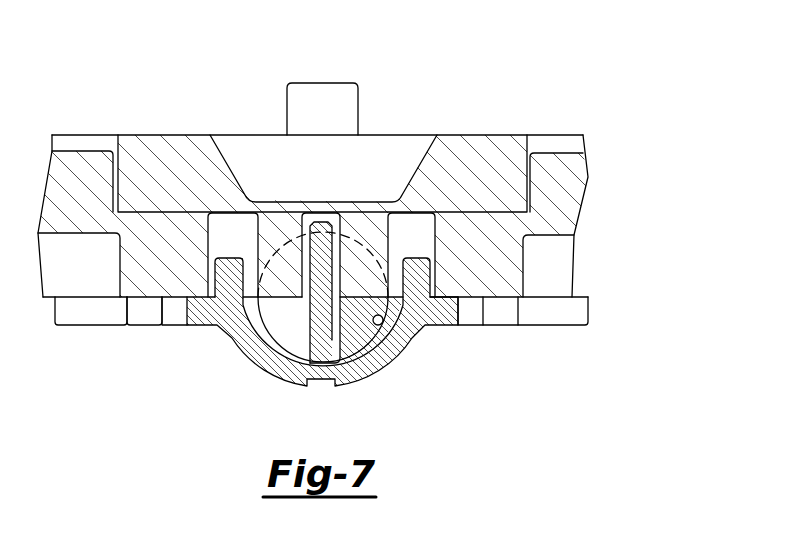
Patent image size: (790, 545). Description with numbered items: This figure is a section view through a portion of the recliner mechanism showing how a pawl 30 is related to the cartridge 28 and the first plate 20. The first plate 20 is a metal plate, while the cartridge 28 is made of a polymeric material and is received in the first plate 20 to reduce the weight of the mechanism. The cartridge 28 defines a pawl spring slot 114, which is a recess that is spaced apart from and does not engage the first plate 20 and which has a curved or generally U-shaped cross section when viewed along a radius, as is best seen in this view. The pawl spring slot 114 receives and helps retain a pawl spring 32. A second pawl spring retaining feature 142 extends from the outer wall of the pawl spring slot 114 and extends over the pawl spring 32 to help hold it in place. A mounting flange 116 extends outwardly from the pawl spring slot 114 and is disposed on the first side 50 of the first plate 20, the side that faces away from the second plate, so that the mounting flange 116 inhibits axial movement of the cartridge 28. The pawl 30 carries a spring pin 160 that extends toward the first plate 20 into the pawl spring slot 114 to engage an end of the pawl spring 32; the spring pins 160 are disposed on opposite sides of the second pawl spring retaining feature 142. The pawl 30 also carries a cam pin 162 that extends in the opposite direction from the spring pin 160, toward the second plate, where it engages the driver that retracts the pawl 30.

The first plate 20 is at (587, 178).
The pawl 30 is at (475, 135).
The cam pin 162 is at (358, 103).
The cartridge 28 is at (590, 313).
The first side 50 is at (141, 299).
The mounting flange 116 is at (186, 326).
The pawl spring slot 114 is at (258, 350).
The pawl spring 32 is at (360, 343).
The second pawl spring retaining feature 142 is at (333, 337).
The spring pin 160 is at (355, 300).